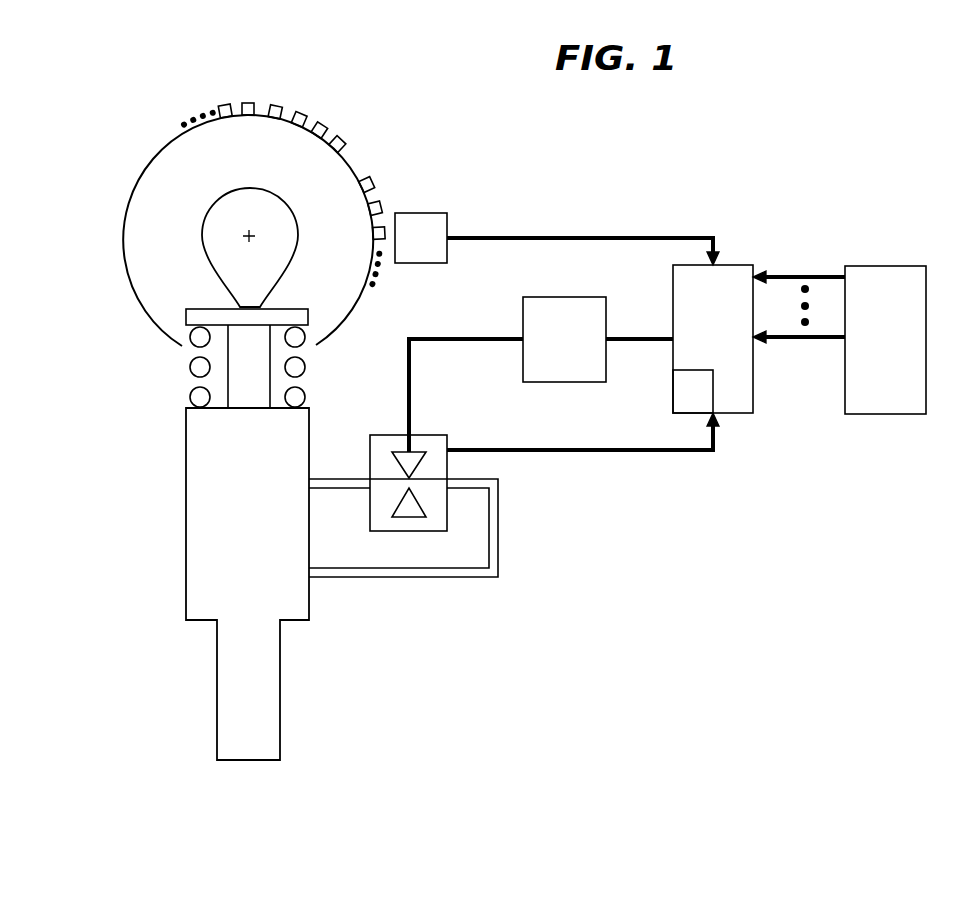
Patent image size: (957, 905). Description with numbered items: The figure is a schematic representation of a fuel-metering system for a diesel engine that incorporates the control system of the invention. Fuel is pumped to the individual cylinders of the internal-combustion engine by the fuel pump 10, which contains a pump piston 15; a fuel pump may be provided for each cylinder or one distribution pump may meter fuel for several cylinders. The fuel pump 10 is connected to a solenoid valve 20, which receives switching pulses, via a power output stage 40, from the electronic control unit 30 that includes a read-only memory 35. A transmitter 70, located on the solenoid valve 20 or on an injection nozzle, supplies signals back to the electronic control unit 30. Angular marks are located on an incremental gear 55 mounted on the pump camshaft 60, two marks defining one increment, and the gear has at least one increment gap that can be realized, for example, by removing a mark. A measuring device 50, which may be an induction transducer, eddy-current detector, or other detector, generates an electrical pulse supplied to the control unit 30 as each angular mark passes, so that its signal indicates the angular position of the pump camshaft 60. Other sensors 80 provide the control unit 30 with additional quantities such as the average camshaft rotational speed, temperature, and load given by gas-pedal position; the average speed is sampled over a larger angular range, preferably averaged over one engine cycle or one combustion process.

The fuel pump 10 is at (238, 712).
The pump piston 15 is at (238, 382).
The solenoid valve 20 is at (403, 448).
The electronic control unit 30 is at (733, 270).
The read-only memory 35 is at (692, 394).
The power output stage 40 is at (535, 317).
The measuring device 50 is at (422, 223).
The incremental gear 55 is at (300, 113).
The pump camshaft 60 is at (243, 204).
The transmitter 70 is at (450, 450).
The other sensors 80 is at (905, 405).